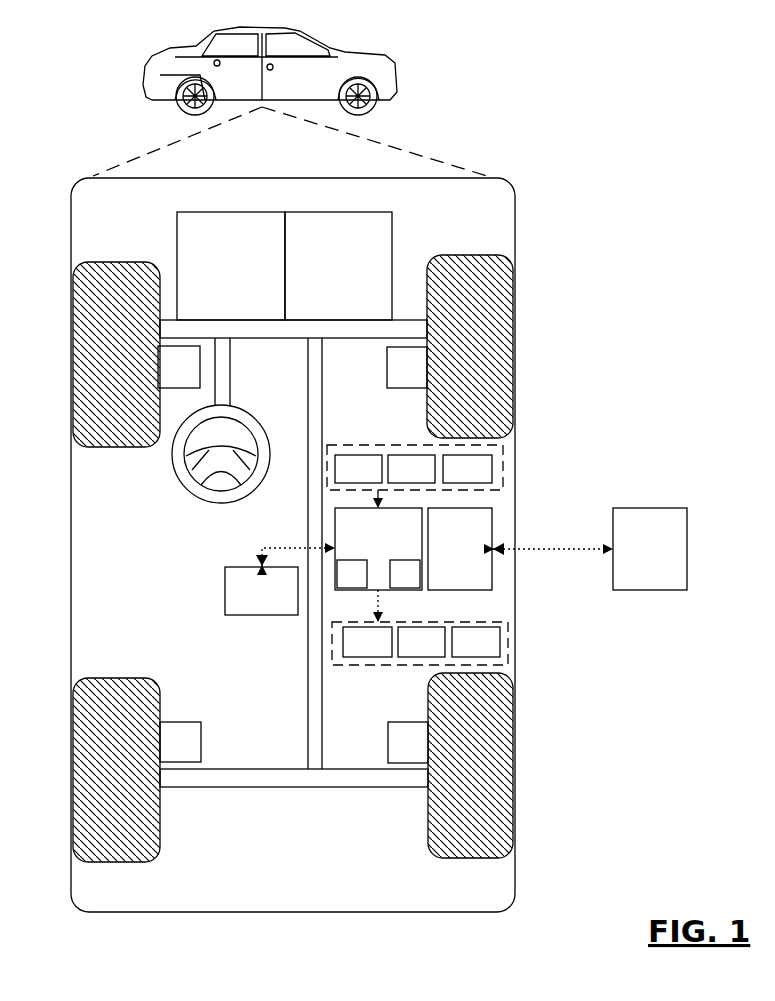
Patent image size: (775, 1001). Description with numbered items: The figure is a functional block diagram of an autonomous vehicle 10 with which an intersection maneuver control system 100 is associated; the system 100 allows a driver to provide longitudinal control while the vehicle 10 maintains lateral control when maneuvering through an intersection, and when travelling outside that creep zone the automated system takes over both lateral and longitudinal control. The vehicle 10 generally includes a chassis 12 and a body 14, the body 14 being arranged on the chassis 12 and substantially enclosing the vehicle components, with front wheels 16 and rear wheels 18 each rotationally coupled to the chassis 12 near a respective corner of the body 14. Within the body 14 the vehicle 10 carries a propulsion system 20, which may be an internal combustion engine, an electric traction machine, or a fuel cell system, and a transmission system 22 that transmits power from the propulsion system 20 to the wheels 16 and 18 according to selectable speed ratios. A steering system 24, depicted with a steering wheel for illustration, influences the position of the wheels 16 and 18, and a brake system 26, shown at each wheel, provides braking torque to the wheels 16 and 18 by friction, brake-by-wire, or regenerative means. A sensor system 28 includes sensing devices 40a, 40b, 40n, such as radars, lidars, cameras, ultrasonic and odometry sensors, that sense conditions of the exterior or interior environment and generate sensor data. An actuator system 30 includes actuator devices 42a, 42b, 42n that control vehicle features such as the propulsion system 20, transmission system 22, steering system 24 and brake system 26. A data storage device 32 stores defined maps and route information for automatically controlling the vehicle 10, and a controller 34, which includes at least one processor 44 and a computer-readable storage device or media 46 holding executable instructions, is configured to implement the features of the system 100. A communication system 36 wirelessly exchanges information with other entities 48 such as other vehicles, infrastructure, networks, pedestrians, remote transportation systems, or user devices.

The vehicle 10 is at (147, 97).
The intersection maneuver control system 100 is at (538, 189).
The chassis 12 is at (308, 707).
The body 14 is at (70, 531).
The front wheels 16 is at (117, 262).
The rear wheels 18 is at (132, 862).
The propulsion system 20 is at (219, 277).
The transmission system 22 is at (326, 277).
The steering system 24 is at (251, 361).
The brake system 26 is at (167, 377).
The sensor system 28 is at (348, 446).
The actuator system 30 is at (372, 666).
The data storage device 32 is at (249, 601).
The controller 34 is at (366, 560).
The communication system 36 is at (448, 560).
The sensing device 40a is at (375, 479).
The sensing device 40b is at (428, 479).
The sensing device 40n is at (484, 479).
The actuator device 42a is at (384, 652).
The actuator device 42b is at (438, 652).
The actuator device 42n is at (493, 652).
The processor 44 is at (340, 584).
The computer-readable storage device or media 46 is at (393, 584).
The other entities 48 is at (638, 560).